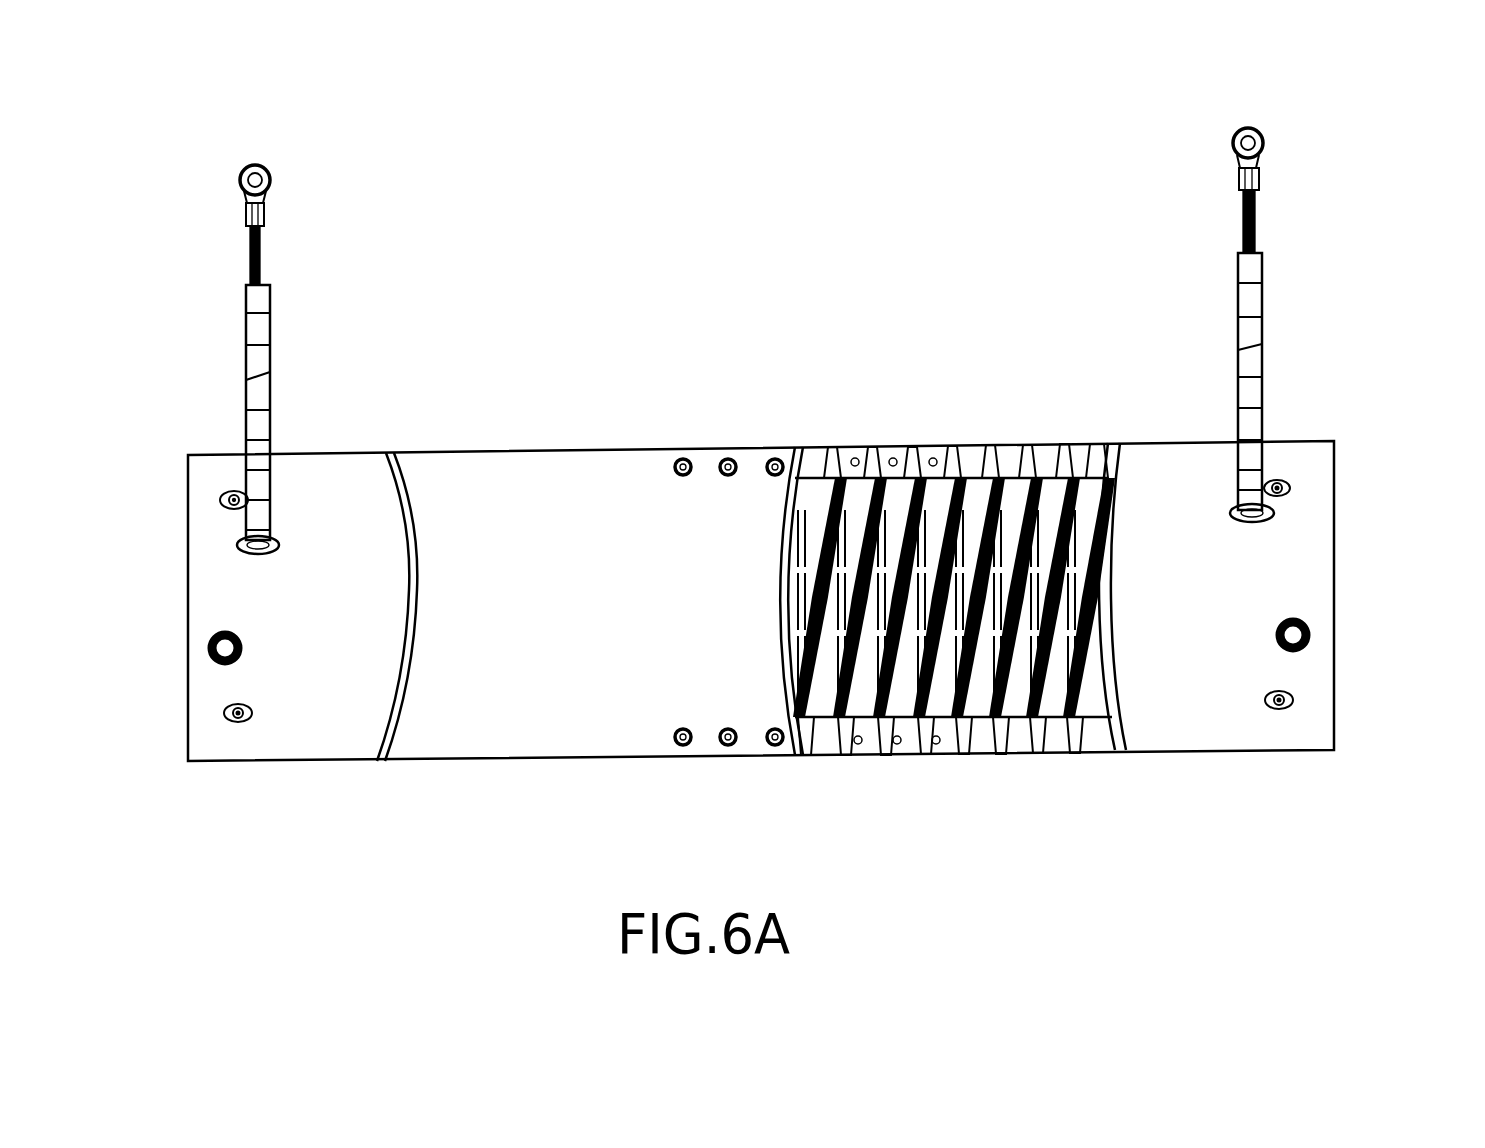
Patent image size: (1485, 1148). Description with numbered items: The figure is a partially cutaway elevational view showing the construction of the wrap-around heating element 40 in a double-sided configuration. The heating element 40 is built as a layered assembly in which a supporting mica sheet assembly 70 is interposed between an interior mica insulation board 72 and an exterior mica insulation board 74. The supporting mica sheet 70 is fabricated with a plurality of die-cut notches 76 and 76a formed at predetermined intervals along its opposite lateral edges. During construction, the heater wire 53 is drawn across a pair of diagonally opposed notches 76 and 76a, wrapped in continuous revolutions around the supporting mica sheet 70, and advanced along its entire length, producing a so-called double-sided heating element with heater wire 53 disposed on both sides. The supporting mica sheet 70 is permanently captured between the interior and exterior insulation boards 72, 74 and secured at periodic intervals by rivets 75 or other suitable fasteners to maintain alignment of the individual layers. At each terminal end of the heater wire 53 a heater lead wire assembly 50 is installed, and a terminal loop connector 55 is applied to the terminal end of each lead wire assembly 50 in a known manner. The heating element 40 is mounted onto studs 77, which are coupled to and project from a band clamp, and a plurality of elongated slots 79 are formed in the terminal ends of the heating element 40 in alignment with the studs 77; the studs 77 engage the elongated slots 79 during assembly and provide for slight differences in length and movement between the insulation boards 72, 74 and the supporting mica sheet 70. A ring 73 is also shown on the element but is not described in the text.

The wrap-around heating element 40 is at (773, 218).
The heater lead wire assembly 50 is at (295, 359).
The heater wire 53 is at (968, 484).
The terminal loop connector 55 is at (1262, 143).
The supporting mica sheet assembly 70 is at (1122, 485).
The interior mica insulation board 72 is at (999, 550).
The mounting ring 73 is at (345, 463).
The exterior mica insulation board 74 is at (761, 510).
The rivets 75 is at (651, 558).
The die-cut notches 76 is at (966, 406).
The die-cut notches 76a is at (1070, 718).
The studs 77 is at (829, 549).
The elongated slots 79 is at (758, 670).